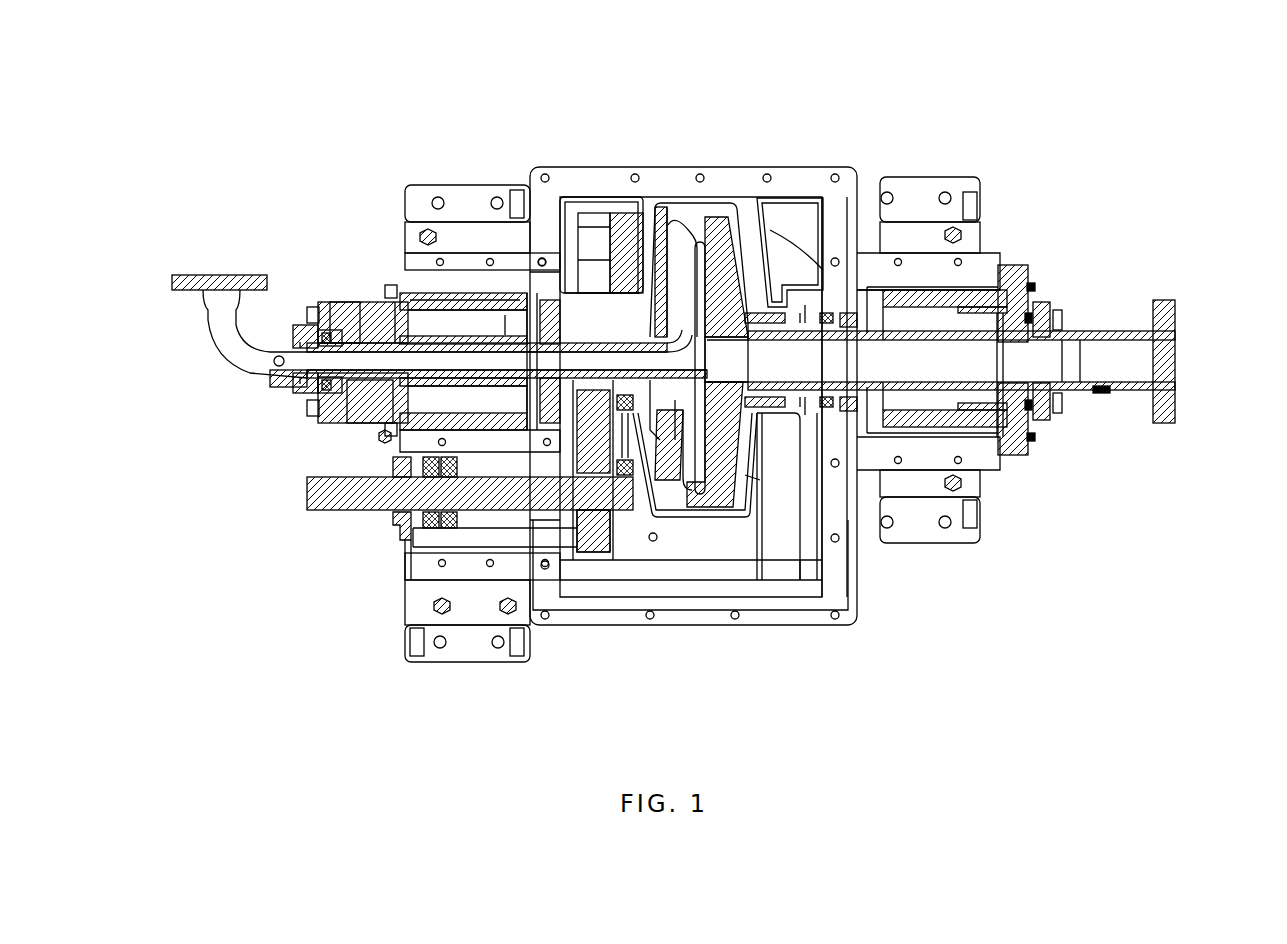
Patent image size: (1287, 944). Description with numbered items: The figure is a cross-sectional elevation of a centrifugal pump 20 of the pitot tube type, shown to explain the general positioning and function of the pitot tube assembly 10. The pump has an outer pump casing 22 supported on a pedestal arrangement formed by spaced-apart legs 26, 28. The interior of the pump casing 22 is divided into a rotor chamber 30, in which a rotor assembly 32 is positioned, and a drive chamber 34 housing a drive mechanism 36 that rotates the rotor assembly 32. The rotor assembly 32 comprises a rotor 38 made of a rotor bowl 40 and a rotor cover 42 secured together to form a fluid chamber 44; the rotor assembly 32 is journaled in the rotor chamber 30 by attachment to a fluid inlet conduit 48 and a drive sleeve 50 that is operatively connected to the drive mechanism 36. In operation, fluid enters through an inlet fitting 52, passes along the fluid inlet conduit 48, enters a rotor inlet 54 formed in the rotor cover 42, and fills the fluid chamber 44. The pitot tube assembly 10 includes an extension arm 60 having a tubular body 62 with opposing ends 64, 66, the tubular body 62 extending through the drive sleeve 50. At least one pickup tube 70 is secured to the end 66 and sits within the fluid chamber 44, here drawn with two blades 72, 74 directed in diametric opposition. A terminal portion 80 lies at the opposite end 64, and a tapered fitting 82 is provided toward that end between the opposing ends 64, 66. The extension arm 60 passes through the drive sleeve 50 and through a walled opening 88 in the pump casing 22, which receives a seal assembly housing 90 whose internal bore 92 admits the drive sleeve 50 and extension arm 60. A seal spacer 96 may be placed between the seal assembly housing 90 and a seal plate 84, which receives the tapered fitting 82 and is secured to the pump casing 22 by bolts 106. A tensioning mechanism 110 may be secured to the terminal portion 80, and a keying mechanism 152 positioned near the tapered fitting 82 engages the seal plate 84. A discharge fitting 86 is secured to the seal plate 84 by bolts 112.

The pitot tube assembly 10 is at (390, 508).
The centrifugal pump 20 is at (846, 105).
The outer pump casing 22 is at (600, 172).
The leg 26 is at (473, 655).
The leg 28 is at (926, 538).
The rotor chamber 30 is at (672, 205).
The rotor assembly 32 is at (720, 525).
The drive chamber 34 is at (630, 200).
The drive mechanism 36 is at (594, 565).
The rotor 38 is at (688, 507).
The rotor bowl 40 is at (722, 230).
The rotor cover 42 is at (792, 245).
The fluid chamber 44 is at (750, 250).
The fluid inlet conduit 48 is at (912, 382).
The drive sleeve 50 is at (557, 300).
The inlet fitting 52 is at (1178, 335).
The rotor inlet 54 is at (820, 587).
The extension arm 60 is at (487, 400).
The tubular body 62 is at (393, 447).
The end 64 is at (305, 375).
The end 66 is at (655, 430).
The pickup tube 70 is at (676, 445).
The blade 72 is at (845, 200).
The blade 74 is at (750, 480).
The terminal portion 80 is at (316, 392).
The tapered fitting 82 is at (366, 302).
The seal plate 84 is at (352, 300).
The discharge fitting 86 is at (200, 350).
The walled opening 88 is at (462, 300).
The seal assembly housing 90 is at (430, 300).
The internal bore 92 is at (500, 310).
The seal spacer 96 is at (400, 296).
The bolts 106 is at (388, 285).
The tensioning mechanism 110 is at (332, 400).
The bolts 112 is at (308, 305).
The keying mechanism 152 is at (307, 492).